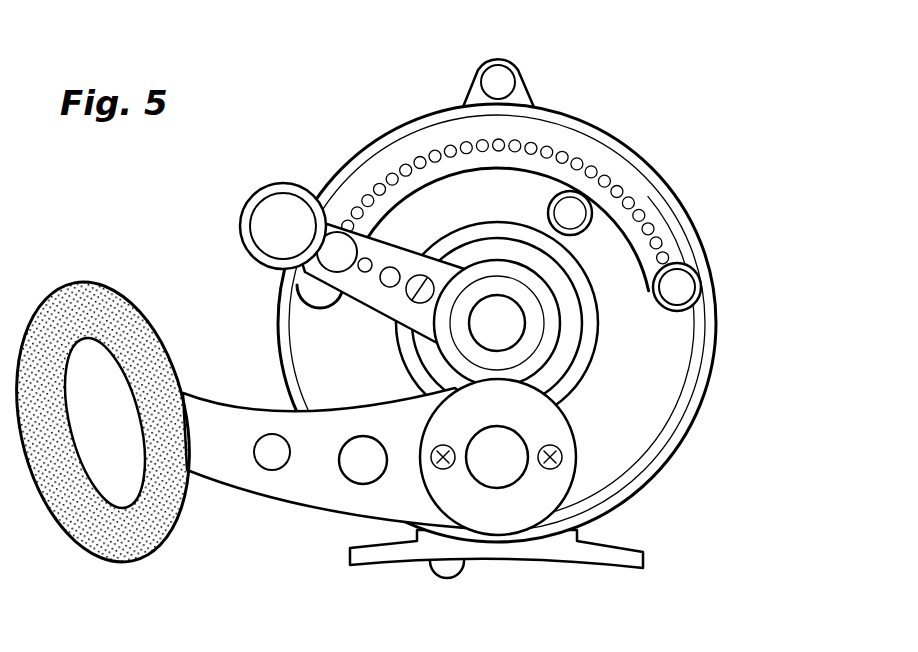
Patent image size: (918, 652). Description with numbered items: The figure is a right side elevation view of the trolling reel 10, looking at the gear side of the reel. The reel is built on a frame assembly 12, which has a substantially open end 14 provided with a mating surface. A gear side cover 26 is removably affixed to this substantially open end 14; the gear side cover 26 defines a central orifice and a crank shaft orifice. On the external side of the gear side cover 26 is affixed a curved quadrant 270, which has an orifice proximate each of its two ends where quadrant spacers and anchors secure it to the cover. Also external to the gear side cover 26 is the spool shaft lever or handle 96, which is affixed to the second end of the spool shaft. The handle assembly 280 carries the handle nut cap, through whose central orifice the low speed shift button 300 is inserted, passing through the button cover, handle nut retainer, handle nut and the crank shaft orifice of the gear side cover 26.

The trolling reel 10 is at (509, 293).
The frame assembly 12 is at (703, 237).
The substantially open end 14 is at (658, 162).
The gear side cover 26 is at (657, 413).
The spool shaft lever 96 is at (295, 205).
The curved quadrant 270 is at (568, 145).
The handle assembly 280 is at (275, 487).
The low speed shift button 300 is at (495, 468).